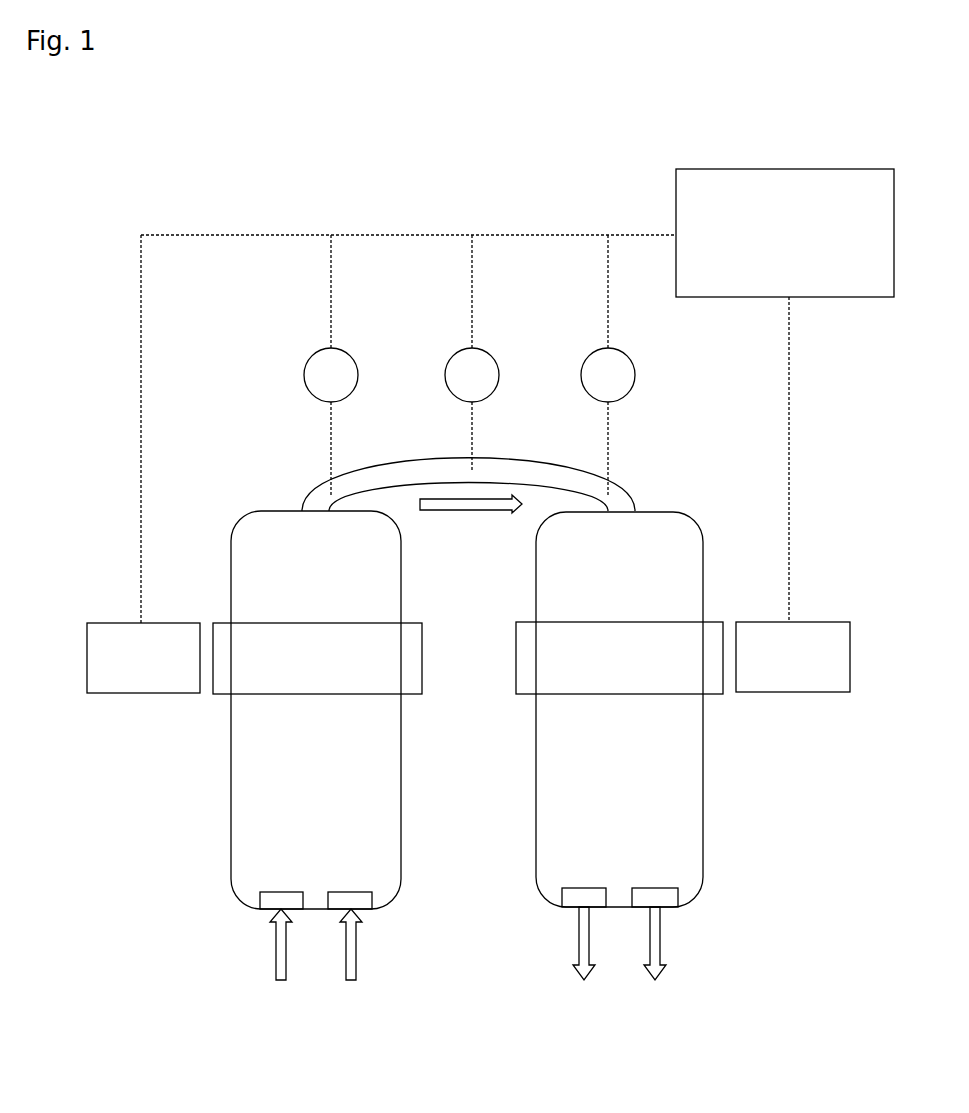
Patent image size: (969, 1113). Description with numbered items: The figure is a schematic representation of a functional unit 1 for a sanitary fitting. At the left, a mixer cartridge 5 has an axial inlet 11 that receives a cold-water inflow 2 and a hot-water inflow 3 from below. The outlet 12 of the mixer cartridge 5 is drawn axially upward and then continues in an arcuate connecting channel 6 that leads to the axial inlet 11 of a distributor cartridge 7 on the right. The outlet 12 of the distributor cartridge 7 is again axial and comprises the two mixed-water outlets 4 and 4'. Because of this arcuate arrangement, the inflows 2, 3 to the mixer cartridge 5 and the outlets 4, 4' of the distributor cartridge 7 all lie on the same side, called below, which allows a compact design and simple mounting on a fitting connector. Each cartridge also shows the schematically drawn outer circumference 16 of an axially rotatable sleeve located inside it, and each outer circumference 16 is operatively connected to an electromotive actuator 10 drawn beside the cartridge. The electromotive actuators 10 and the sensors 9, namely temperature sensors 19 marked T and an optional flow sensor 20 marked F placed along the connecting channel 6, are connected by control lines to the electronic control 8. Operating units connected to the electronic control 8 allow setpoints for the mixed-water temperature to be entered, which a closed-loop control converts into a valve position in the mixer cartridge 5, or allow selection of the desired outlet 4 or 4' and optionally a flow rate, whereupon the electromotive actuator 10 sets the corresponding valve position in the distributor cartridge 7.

The functional unit 1 is at (264, 166).
The cold-water inflow 2 is at (281, 962).
The hot-water inflow 3 is at (351, 962).
The mixed-water outlet 4 is at (584, 961).
The mixed-water outlet 4' is at (655, 961).
The mixer cartridge 5 is at (325, 802).
The arcuate connecting channel 6 is at (428, 472).
The distributor cartridge 7 is at (624, 802).
The electronic control 8 is at (790, 224).
The sensors 9 is at (445, 366).
The electromotive actuator 10 is at (159, 667).
The axial inlet 11 is at (640, 497).
The outlet 12 is at (298, 500).
The outer circumference 16 is at (329, 669).
The temperature sensor 19 is at (307, 353).
The flow sensor 20 is at (452, 349).